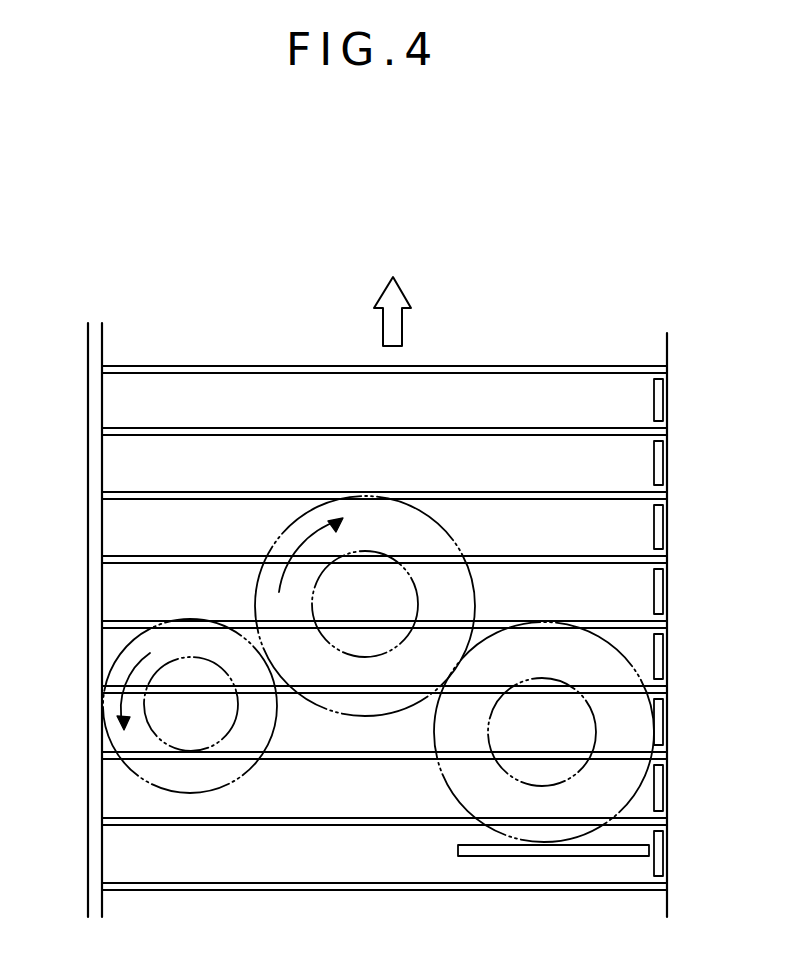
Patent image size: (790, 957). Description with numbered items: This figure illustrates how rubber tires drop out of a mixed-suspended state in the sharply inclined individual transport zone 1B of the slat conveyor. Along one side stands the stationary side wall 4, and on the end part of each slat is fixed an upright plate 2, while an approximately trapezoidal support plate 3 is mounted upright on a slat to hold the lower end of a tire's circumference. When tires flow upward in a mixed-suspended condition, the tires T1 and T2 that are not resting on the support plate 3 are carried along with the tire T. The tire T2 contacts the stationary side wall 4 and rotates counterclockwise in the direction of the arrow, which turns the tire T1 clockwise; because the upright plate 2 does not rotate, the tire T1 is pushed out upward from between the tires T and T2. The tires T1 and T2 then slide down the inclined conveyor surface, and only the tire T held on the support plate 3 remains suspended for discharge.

The stationary side wall 4 is at (90, 402).
The sharply inclined individual transport zone 1B is at (515, 382).
The upright plate 2 is at (663, 722).
The rubber tire support plate 3 is at (592, 851).
The tire T is at (544, 630).
The tire T1 is at (437, 524).
The tire T2 is at (161, 620).